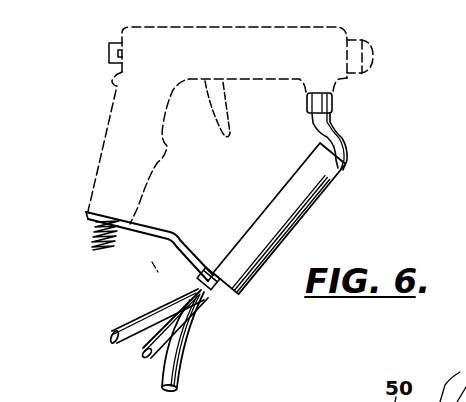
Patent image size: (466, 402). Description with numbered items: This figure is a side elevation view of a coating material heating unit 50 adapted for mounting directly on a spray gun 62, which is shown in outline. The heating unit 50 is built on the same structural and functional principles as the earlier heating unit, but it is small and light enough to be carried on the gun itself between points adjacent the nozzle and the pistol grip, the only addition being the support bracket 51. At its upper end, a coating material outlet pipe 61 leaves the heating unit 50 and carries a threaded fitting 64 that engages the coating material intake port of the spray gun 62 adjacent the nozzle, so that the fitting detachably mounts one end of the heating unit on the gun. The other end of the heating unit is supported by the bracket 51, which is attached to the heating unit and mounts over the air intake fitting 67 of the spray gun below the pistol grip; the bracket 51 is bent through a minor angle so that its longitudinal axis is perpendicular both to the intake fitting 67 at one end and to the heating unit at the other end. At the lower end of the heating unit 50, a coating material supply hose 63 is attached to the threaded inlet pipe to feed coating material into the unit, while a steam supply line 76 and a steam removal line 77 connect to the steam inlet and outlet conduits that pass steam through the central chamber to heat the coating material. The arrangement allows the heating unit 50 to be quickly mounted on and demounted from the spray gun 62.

The heating unit 50 is at (316, 209).
The support bracket 51 is at (165, 236).
The coating material outlet pipe 61 is at (333, 143).
The spray gun 62 is at (95, 180).
The coating material supply hose 63 is at (188, 333).
The threaded fitting 64 is at (334, 103).
The air intake fitting 67 is at (97, 246).
The steam supply line 76 is at (142, 348).
The steam removal line 77 is at (127, 322).